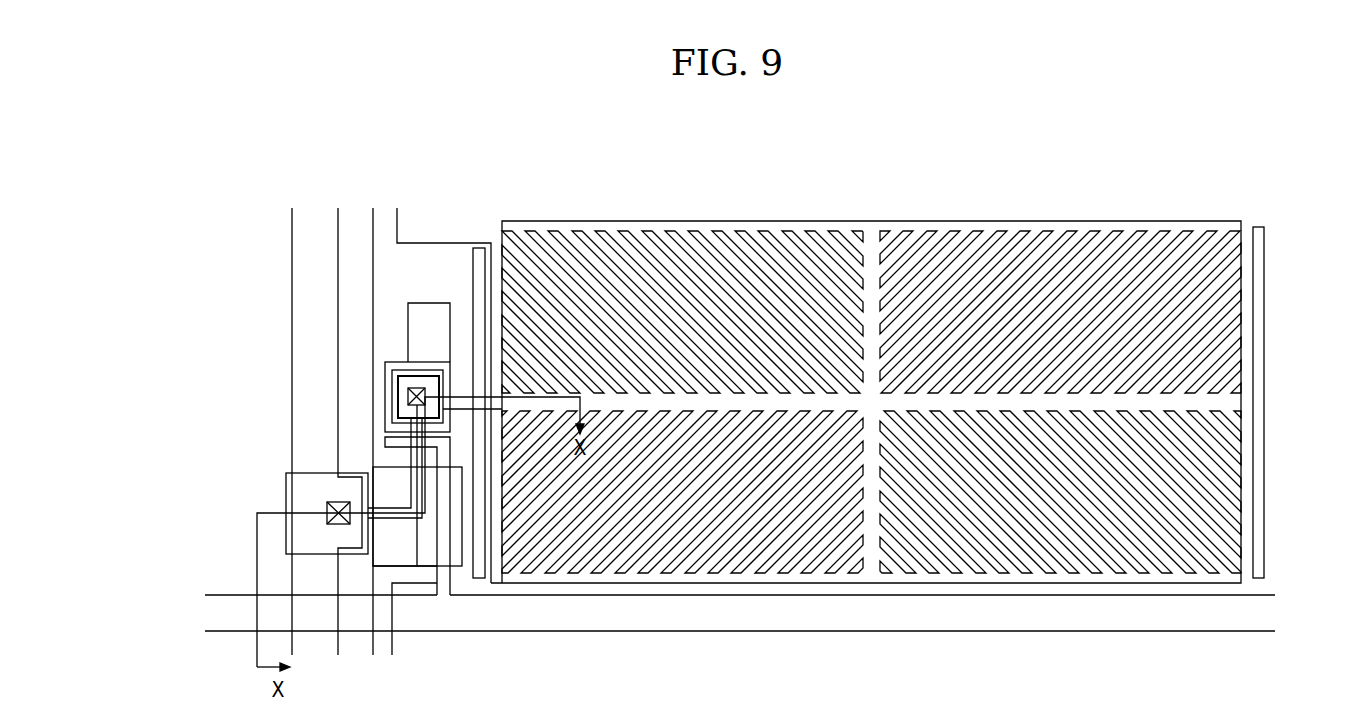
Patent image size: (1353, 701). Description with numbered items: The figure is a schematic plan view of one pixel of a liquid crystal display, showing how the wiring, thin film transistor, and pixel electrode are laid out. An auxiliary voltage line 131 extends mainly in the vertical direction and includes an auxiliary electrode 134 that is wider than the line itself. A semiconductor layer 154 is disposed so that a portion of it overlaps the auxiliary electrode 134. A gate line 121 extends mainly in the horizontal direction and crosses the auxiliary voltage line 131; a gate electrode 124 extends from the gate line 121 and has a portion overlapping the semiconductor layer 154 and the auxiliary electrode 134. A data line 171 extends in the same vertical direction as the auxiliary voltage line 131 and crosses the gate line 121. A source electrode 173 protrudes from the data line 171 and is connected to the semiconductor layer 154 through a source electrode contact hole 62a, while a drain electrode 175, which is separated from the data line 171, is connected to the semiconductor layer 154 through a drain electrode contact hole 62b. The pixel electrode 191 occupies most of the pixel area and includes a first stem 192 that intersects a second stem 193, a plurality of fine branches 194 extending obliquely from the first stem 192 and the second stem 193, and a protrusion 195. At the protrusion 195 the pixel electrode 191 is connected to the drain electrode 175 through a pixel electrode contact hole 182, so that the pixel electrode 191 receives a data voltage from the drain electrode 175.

The gate line 121 is at (607, 633).
The gate electrode 124 is at (385, 441).
The auxiliary voltage line 131 is at (385, 222).
The auxiliary electrode 134 is at (373, 298).
The semiconductor layer 154 is at (286, 474).
The data line 171 is at (303, 237).
The source electrode 173 is at (362, 536).
The drain electrode 175 is at (405, 325).
The pixel electrode contact hole 182 is at (418, 386).
The pixel electrode 191 is at (627, 222).
The first stem 192 is at (770, 400).
The second stem 193 is at (871, 250).
The fine branches 194 is at (940, 270).
The protrusion 195 is at (432, 372).
The source electrode contact hole 62a is at (343, 522).
The drain electrode contact hole 62b is at (421, 292).